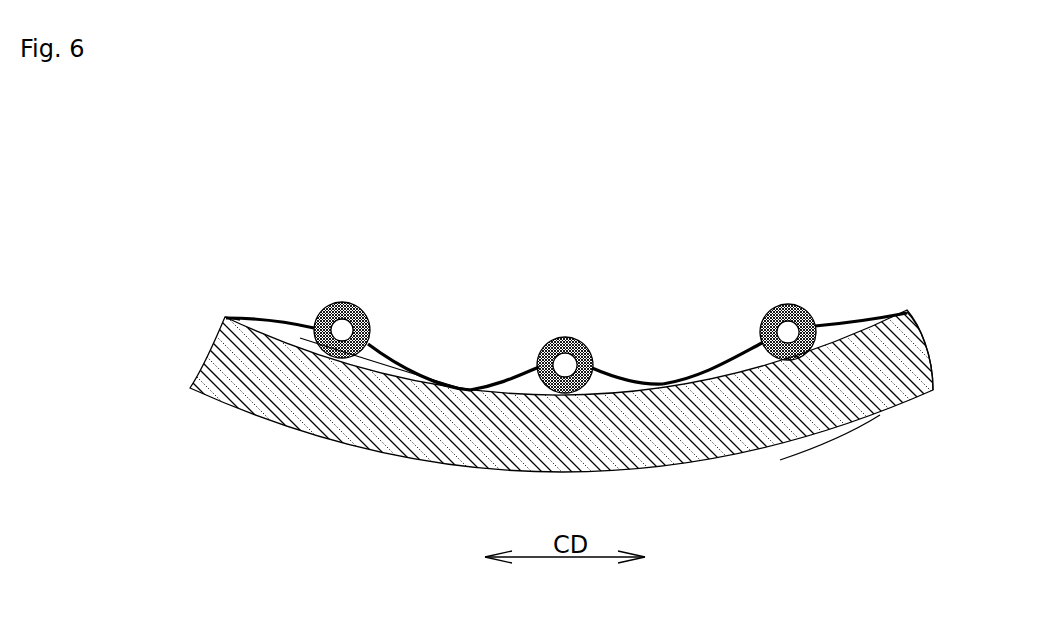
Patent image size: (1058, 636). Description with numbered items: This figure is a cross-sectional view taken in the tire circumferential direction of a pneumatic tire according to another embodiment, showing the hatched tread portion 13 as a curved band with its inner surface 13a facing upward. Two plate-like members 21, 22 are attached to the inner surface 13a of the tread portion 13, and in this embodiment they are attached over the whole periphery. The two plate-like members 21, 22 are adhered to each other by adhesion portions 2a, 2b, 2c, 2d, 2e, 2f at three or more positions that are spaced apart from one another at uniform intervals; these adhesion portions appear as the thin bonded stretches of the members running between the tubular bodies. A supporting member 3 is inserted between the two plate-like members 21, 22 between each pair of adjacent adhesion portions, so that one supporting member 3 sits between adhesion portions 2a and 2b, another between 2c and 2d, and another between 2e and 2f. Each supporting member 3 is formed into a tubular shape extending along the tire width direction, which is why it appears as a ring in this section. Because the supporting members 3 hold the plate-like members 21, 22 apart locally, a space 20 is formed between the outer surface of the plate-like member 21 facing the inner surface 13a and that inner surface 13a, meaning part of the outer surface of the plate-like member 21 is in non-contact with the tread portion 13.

The adhesion portion 2a is at (308, 322).
The adhesion portion 2b is at (372, 342).
The adhesion portion 2c is at (534, 368).
The adhesion portion 2d is at (594, 372).
The adhesion portion 2e is at (758, 352).
The adhesion portion 2f is at (818, 325).
The supporting member 3 is at (345, 302).
The tread portion 13 is at (733, 474).
The inner surface of the tread portion 13a is at (294, 337).
The space 20 is at (367, 361).
The plate-like member 21 is at (847, 380).
The plate-like member 22 is at (847, 380).